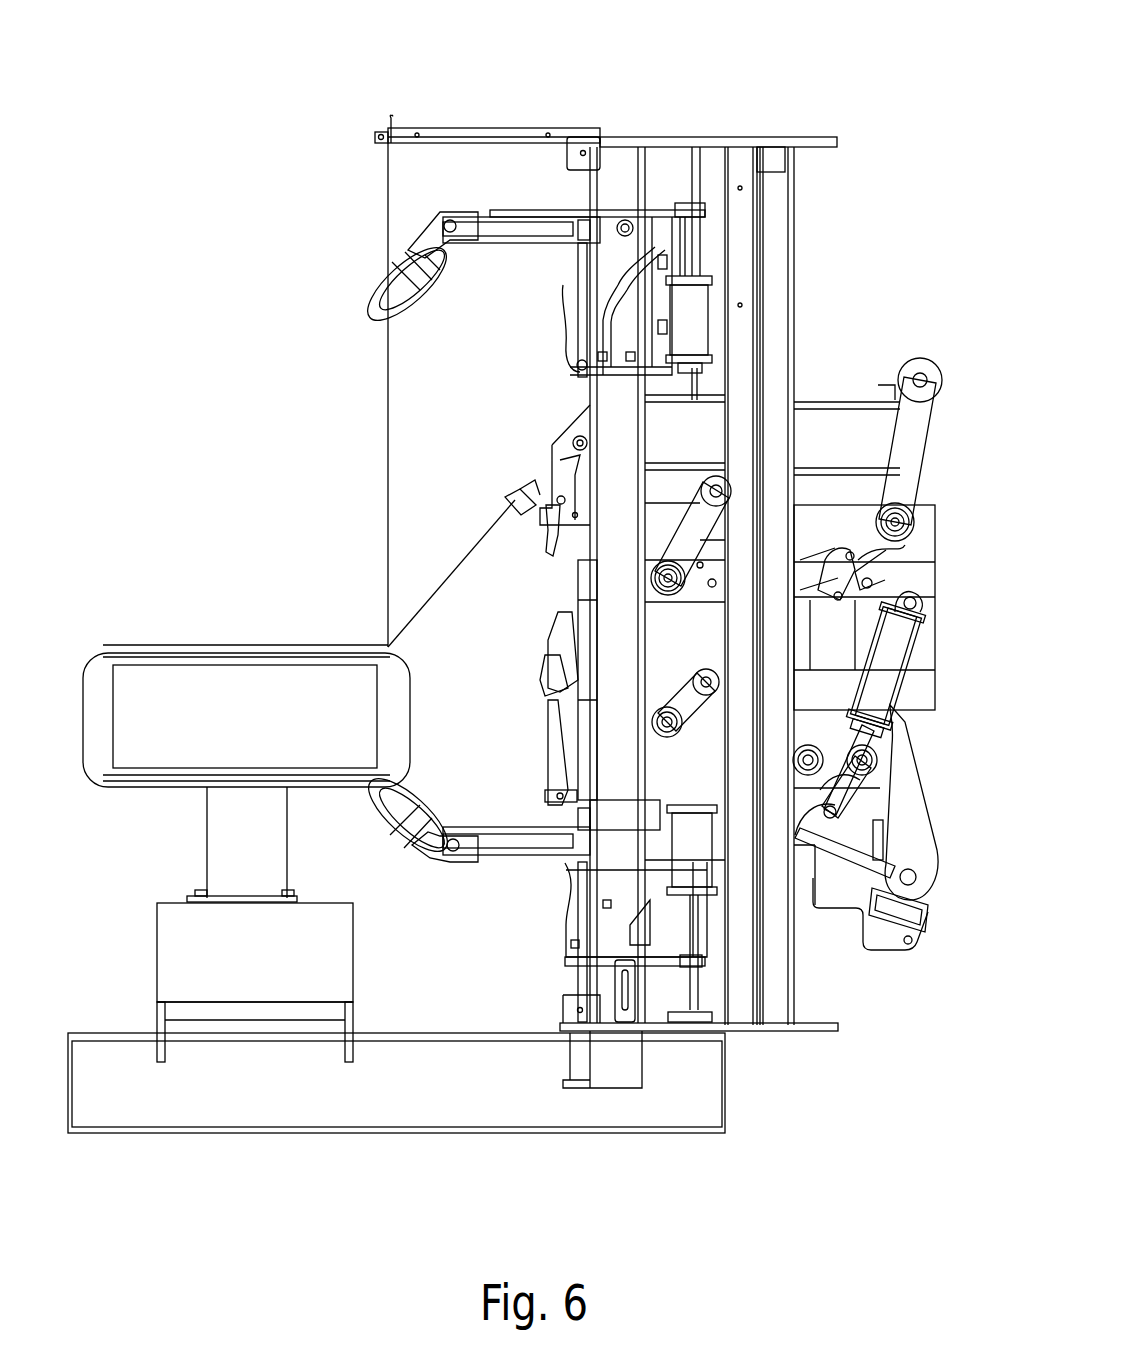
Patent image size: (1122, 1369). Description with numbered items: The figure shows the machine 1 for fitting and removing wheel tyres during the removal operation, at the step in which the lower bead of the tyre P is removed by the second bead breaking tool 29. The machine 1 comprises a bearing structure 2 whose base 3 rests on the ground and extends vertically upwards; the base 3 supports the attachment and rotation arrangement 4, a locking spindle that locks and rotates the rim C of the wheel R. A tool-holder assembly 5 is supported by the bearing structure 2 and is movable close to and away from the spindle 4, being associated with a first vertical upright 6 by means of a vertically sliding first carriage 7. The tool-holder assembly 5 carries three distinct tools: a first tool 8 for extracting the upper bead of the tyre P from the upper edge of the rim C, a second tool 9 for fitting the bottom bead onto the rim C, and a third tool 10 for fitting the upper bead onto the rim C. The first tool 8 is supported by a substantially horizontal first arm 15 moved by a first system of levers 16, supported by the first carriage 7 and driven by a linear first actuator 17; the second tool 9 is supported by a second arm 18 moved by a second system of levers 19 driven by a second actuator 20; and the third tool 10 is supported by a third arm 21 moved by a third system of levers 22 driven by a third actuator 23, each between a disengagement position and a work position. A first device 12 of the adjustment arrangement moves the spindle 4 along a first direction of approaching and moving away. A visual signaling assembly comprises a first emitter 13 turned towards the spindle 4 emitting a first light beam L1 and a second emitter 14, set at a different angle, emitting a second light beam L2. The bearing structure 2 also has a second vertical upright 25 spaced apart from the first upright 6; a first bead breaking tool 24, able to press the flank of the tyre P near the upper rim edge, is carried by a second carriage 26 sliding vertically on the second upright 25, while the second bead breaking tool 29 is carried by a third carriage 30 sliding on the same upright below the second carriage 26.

The machine 1 is at (905, 42).
The bearing structure 2 is at (800, 210).
The base 3 is at (600, 1110).
The attachment and rotation arrangement 4 is at (252, 858).
The tool-holder assembly 5 is at (932, 572).
The first vertical upright 6 is at (658, 188).
The first carriage 7 is at (578, 602).
The first tool 8 is at (545, 550).
The second tool 9 is at (553, 745).
The third tool 10 is at (555, 670).
The first device 12 is at (272, 973).
The first emitter 13 is at (380, 143).
The second emitter 14 is at (522, 503).
The first arm 15 is at (808, 422).
The first system of levers 16 is at (895, 470).
The first actuator 17 is at (908, 517).
The second arm 18 is at (838, 890).
The second system of levers 19 is at (913, 832).
The second actuator 20 is at (930, 920).
The third arm 21 is at (565, 608).
The third system of levers 22 is at (808, 812).
The third actuator 23 is at (892, 678).
The first bead breaking tool 24 is at (385, 276).
The second vertical upright 25 is at (625, 163).
The second carriage 26 is at (572, 285).
The second bead breaking tool 29 is at (410, 818).
The third carriage 30 is at (565, 895).
The first light beam L1 is at (388, 413).
The second light beam L2 is at (408, 590).
The wheel R is at (112, 612).
The rim C is at (238, 680).
The tyre P is at (92, 775).